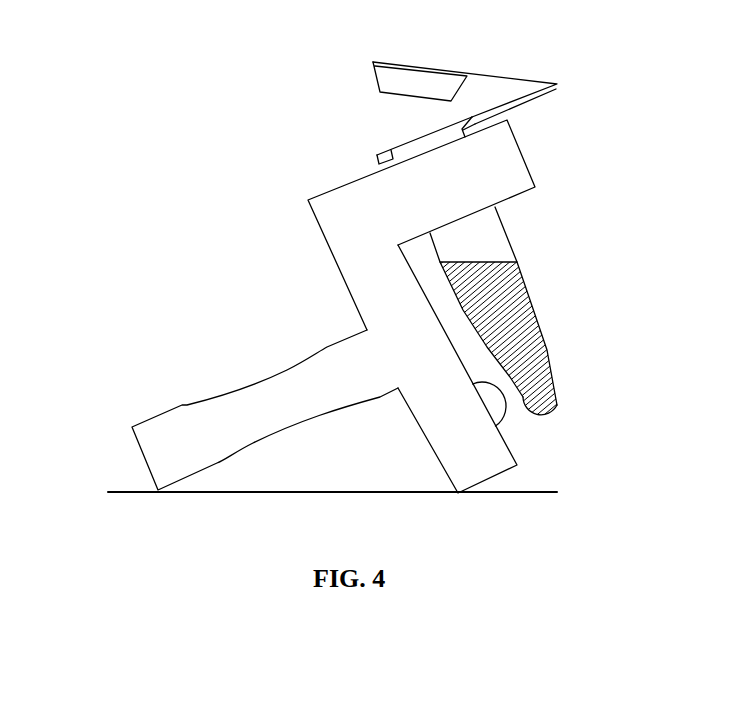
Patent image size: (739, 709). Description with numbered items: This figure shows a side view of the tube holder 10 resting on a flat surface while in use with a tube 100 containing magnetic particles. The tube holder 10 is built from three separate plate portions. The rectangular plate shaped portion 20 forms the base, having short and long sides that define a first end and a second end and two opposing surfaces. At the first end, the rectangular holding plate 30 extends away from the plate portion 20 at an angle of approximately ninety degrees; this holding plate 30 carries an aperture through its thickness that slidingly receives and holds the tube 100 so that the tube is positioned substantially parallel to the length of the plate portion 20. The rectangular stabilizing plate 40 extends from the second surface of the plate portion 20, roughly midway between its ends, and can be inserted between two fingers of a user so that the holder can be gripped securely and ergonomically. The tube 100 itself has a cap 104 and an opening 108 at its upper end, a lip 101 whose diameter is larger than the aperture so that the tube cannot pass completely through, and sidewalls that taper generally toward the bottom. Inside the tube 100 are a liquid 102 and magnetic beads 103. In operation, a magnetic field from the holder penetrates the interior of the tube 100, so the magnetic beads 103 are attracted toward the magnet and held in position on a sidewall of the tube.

The tube holder 10 is at (238, 295).
The rectangular plate shaped portion 20 is at (452, 447).
The rectangular holding plate 30 is at (507, 170).
The rectangular stabilizing plate 40 is at (168, 432).
The tube 100 is at (511, 239).
The lip 101 is at (377, 163).
The liquid 102 is at (517, 327).
The magnetic beads 103 is at (510, 374).
The cap 104 is at (372, 62).
The opening 108 is at (415, 140).